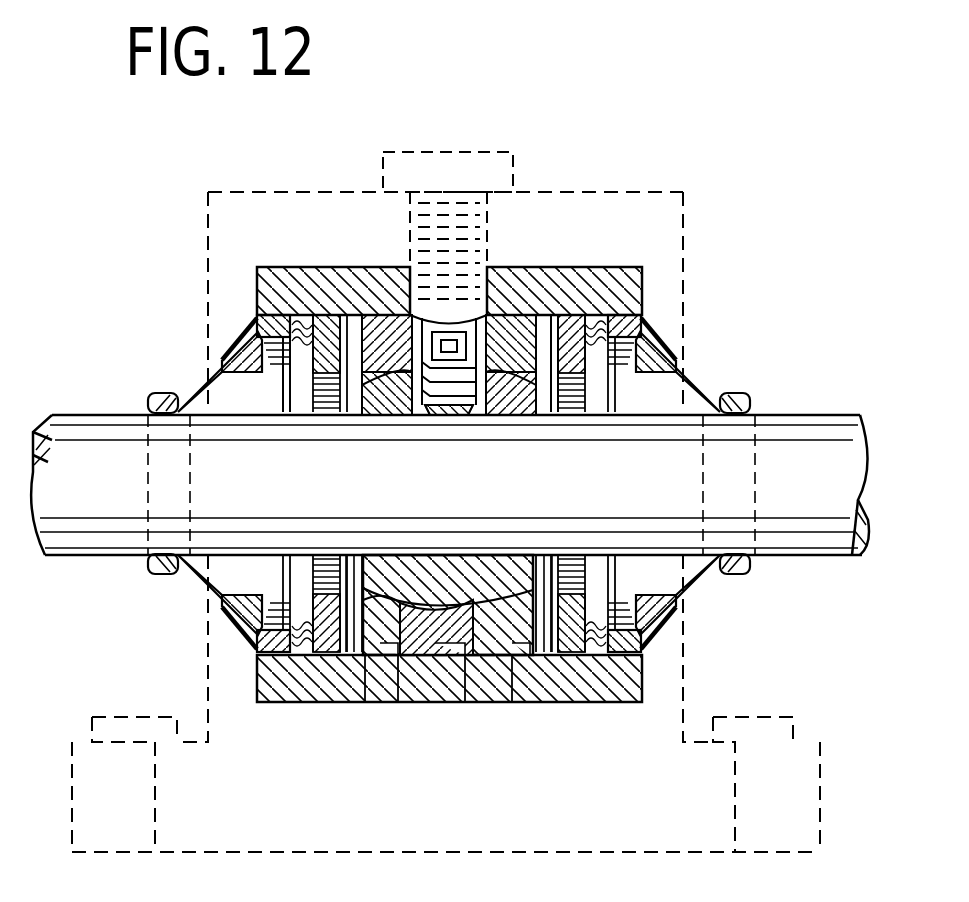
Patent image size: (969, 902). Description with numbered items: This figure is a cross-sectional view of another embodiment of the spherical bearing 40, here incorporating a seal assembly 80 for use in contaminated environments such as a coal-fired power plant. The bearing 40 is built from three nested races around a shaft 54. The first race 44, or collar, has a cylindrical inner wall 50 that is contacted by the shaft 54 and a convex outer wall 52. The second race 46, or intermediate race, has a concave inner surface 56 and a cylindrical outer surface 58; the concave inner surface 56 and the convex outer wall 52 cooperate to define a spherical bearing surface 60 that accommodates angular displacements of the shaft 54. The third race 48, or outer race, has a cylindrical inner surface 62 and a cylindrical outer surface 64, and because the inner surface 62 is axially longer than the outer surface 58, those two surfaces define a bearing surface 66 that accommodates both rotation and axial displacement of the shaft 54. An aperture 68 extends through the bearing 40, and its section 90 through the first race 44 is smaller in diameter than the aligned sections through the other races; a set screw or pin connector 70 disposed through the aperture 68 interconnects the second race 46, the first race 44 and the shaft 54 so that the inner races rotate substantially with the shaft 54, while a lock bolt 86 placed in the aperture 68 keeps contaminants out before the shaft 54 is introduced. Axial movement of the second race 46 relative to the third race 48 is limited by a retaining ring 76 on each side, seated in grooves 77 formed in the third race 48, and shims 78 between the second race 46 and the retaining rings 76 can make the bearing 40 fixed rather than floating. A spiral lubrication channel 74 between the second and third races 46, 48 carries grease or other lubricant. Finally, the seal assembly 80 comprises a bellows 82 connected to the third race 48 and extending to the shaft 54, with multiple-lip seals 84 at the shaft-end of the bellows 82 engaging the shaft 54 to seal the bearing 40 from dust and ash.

The bearing 40 is at (566, 186).
The first race 44 is at (402, 600).
The second race 46 is at (418, 638).
The third race 48 is at (302, 676).
The cylindrical inner wall 50 is at (522, 618).
The convex outer wall 52 is at (460, 598).
The shaft 54 is at (790, 458).
The concave inner surface 56 is at (505, 390).
The cylindrical outer surface 58 is at (424, 640).
The spherical bearing surface 60 is at (474, 662).
The inner surface 62 is at (372, 678).
The outer surface 64 is at (404, 664).
The bearing surface 66 is at (492, 668).
The aperture 68 is at (402, 292).
The connector 70 is at (452, 372).
The spiral lubrication channel 74 is at (335, 352).
The retaining ring 76 is at (598, 332).
The grooves 77 is at (585, 332).
The shims 78 is at (302, 330).
The seal assembly 80 is at (205, 360).
The bellows 82 is at (682, 600).
The multiple-lip seals 84 is at (742, 412).
The lock bolt 86 is at (452, 166).
The section 90 is at (412, 398).